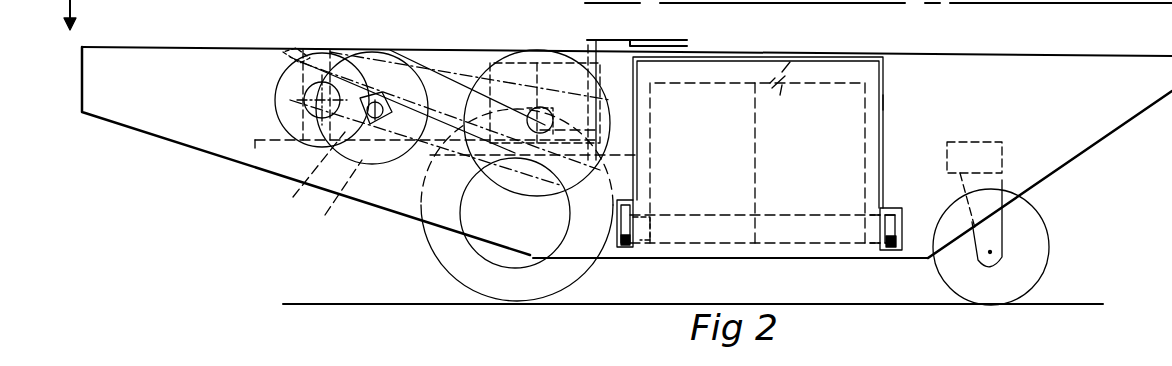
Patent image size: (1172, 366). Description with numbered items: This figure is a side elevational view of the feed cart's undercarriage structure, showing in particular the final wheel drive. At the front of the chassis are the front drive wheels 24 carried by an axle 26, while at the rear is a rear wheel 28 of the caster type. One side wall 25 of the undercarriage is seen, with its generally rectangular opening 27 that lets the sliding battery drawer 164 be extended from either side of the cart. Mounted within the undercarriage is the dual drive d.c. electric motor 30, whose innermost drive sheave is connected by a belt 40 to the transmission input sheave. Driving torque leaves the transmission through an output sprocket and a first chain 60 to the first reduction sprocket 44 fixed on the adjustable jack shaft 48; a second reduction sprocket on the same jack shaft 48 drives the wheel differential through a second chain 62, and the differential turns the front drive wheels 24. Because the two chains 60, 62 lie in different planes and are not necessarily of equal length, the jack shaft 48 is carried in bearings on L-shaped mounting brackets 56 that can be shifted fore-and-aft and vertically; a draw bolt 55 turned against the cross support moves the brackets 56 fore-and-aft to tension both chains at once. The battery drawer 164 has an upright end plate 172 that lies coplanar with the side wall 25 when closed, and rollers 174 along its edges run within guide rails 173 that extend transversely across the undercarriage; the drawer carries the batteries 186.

The front drive wheels 24 is at (585, 246).
The side wall 25 is at (1021, 99).
The axle 26 is at (512, 210).
The rectangular opening 27 is at (886, 110).
The rear wheel 28 is at (1035, 273).
The dual drive d.c. electric motor 30 is at (280, 103).
The belt 40 is at (437, 50).
The first reduction sprocket 44 is at (303, 171).
The adjustable jack shaft 48 is at (327, 197).
The draw bolt 55 is at (283, 52).
The L-shaped mounting bracket 56 is at (290, 78).
The first chain 60 is at (472, 93).
The second chain 62 is at (392, 178).
The battery drawer 164 is at (803, 249).
The end plate 172 is at (715, 70).
The guide rails 173 is at (617, 232).
The rollers 174 is at (630, 218).
The batteries 186 is at (785, 50).